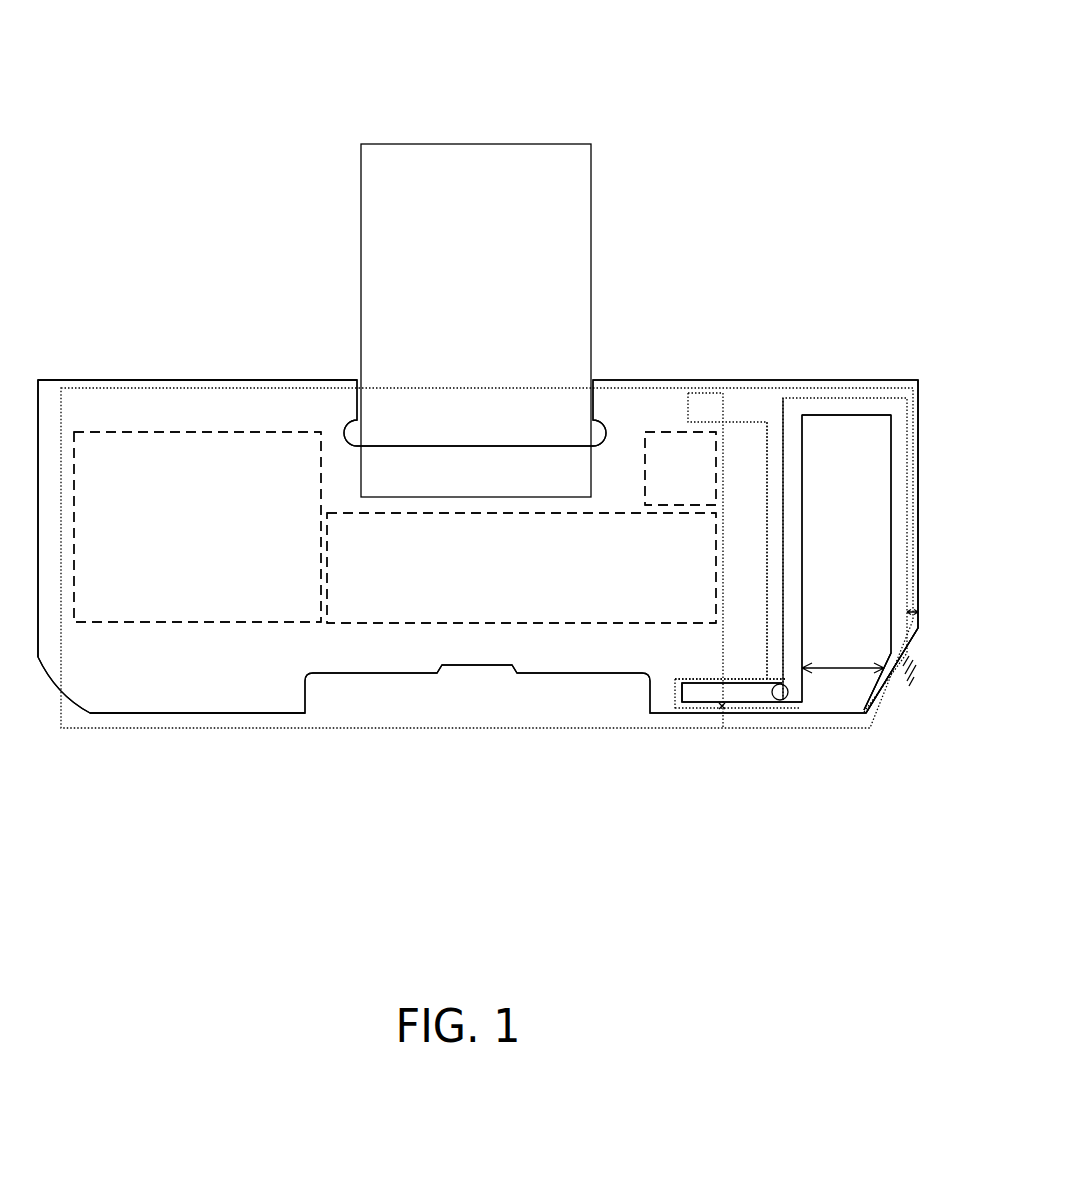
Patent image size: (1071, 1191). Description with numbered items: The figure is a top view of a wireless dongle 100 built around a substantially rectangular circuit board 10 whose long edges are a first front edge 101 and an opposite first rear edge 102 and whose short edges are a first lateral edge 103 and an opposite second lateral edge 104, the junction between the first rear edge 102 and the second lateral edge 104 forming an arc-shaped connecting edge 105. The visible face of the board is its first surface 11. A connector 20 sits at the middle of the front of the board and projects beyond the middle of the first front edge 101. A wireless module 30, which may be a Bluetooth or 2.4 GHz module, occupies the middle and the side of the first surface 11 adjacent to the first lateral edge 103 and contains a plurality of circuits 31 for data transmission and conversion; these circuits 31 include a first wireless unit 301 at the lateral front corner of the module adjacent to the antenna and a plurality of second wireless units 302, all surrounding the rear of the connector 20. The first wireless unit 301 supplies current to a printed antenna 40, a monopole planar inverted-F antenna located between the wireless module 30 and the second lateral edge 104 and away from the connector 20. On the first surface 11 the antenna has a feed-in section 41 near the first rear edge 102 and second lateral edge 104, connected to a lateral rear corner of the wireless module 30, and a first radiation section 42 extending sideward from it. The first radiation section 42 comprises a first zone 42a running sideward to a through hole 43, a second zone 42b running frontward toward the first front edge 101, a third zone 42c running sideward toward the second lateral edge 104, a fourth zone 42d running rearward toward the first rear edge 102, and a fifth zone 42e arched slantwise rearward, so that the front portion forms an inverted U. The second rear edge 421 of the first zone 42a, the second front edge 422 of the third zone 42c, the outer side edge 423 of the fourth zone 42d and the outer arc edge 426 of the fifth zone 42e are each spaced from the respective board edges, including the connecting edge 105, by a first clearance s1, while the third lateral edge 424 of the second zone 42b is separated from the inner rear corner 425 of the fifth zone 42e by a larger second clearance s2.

The wireless dongle 100 is at (50, 42).
The circuit board 10 is at (315, 380).
The first front edge 101 is at (232, 380).
The first rear edge 102 is at (258, 713).
The first lateral edge 103 is at (38, 580).
The second lateral edge 104 is at (924, 440).
The connecting edge 105 is at (880, 705).
The first surface 11 is at (49, 382).
The connector 20 is at (502, 160).
The wireless module 30 is at (643, 385).
The circuits 31 is at (678, 432).
The first wireless unit 301 is at (643, 432).
The second wireless units 302 is at (160, 432).
The printed antenna 40 is at (897, 402).
The feed-in section 41 is at (698, 702).
The first radiation section 42 is at (850, 398).
The first zone 42a is at (750, 695).
The second zone 42b is at (797, 592).
The third zone 42c is at (825, 405).
The fourth zone 42d is at (893, 438).
The fifth zone 42e is at (877, 660).
The second rear edge 421 is at (688, 692).
The second front edge 422 is at (783, 395).
The outer side edge 423 is at (913, 680).
The third lateral edge 424 is at (800, 455).
The inner rear corner 425 is at (890, 668).
The outer arc edge 426 is at (908, 667).
The through hole 43 is at (788, 697).
The first clearance s1 is at (857, 402).
The second clearance s2 is at (840, 670).